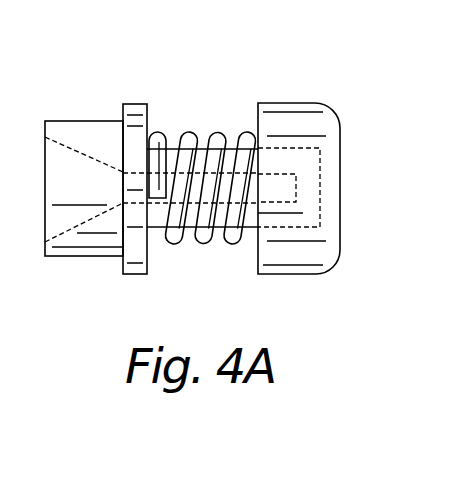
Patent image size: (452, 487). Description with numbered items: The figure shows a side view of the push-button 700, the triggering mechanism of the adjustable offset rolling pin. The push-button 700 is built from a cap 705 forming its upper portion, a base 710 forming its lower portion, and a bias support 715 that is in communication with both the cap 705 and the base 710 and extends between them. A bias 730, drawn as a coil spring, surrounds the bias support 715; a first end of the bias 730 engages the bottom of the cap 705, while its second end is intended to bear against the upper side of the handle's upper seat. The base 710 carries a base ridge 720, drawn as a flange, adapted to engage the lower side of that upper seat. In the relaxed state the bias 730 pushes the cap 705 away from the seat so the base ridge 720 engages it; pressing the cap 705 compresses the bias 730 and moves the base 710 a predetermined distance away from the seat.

The push-button 700 is at (332, 94).
The cap 705 is at (339, 178).
The base 710 is at (84, 256).
The bias support 715 is at (204, 140).
The base ridge 720 is at (130, 104).
The bias 730 is at (204, 237).